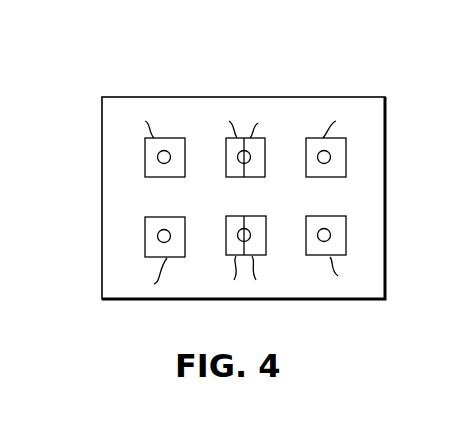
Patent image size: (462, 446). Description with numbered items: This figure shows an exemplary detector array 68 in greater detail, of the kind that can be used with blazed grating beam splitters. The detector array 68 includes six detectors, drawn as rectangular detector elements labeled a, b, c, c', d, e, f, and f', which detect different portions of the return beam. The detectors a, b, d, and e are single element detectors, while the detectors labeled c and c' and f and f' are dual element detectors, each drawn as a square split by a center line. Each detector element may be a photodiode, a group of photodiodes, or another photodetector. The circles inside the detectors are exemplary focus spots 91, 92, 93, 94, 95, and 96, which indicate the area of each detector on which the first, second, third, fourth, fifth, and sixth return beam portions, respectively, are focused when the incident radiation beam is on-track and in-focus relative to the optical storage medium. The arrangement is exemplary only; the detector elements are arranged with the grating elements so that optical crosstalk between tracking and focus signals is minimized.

The detector array 68 is at (119, 96).
The focus spot 91 is at (331, 157).
The focus spot 92 is at (157, 157).
The focus spot 93 is at (238, 240).
The focus spot 94 is at (237, 155).
The focus spot 95 is at (331, 235).
The focus spot 96 is at (157, 236).